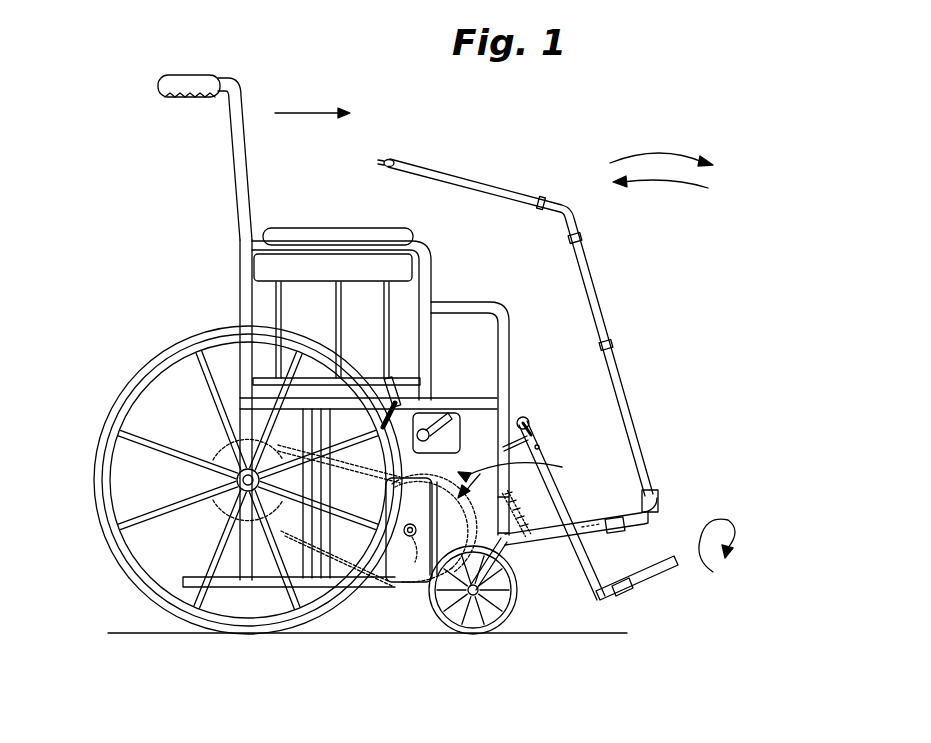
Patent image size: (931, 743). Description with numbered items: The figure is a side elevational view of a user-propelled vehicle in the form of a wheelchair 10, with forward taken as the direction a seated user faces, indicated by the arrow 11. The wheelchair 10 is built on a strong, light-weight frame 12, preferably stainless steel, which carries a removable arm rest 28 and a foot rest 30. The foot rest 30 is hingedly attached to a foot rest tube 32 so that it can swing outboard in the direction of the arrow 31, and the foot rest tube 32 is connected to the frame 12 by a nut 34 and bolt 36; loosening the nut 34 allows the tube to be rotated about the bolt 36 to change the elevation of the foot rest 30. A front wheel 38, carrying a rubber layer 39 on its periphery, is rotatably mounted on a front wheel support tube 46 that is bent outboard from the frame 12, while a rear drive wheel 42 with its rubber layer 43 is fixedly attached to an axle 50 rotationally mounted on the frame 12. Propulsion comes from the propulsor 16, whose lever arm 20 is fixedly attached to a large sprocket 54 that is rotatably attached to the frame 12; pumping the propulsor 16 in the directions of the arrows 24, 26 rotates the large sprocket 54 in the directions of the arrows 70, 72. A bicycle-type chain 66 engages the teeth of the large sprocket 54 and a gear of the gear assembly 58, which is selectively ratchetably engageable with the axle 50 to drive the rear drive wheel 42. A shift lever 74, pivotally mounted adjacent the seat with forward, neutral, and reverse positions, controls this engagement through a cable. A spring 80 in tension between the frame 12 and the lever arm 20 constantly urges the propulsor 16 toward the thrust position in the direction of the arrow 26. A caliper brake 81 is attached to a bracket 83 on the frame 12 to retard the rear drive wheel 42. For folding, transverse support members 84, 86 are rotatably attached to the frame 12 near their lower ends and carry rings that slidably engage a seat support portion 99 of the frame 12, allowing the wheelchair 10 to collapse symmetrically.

The wheelchair 10 is at (193, 296).
The arrow 11 is at (313, 113).
The frame 12 is at (236, 126).
The propulsor 16 is at (648, 297).
The lever arm 20 is at (618, 364).
The arrow 24 is at (676, 160).
The arrow 26 is at (676, 190).
The arm rest 28 is at (300, 227).
The foot rest 30 is at (603, 593).
The arrow 31 is at (738, 520).
The foot rest tube 32 is at (541, 446).
The nut 34 is at (532, 428).
The bolt 36 is at (523, 416).
The front wheel 38 is at (503, 595).
The rubber layer 39 is at (500, 620).
The rear drive wheel 42 is at (142, 573).
The rubber layer 43 is at (125, 560).
The front wheel support tube 46 is at (508, 548).
The axle 50 is at (215, 484).
The large sprocket 54 is at (413, 578).
The gear assembly 58 is at (228, 505).
The bicycle-type chain 66 is at (337, 565).
The arrow 70 is at (562, 467).
The arrow 72 is at (530, 446).
The shift lever 74 is at (446, 397).
The spring 80 is at (518, 514).
The caliper brake 81 is at (374, 395).
The bracket 83 is at (394, 395).
The transverse support member 84 is at (306, 570).
The transverse support member 86 is at (330, 565).
The seat support portion 99 is at (456, 398).